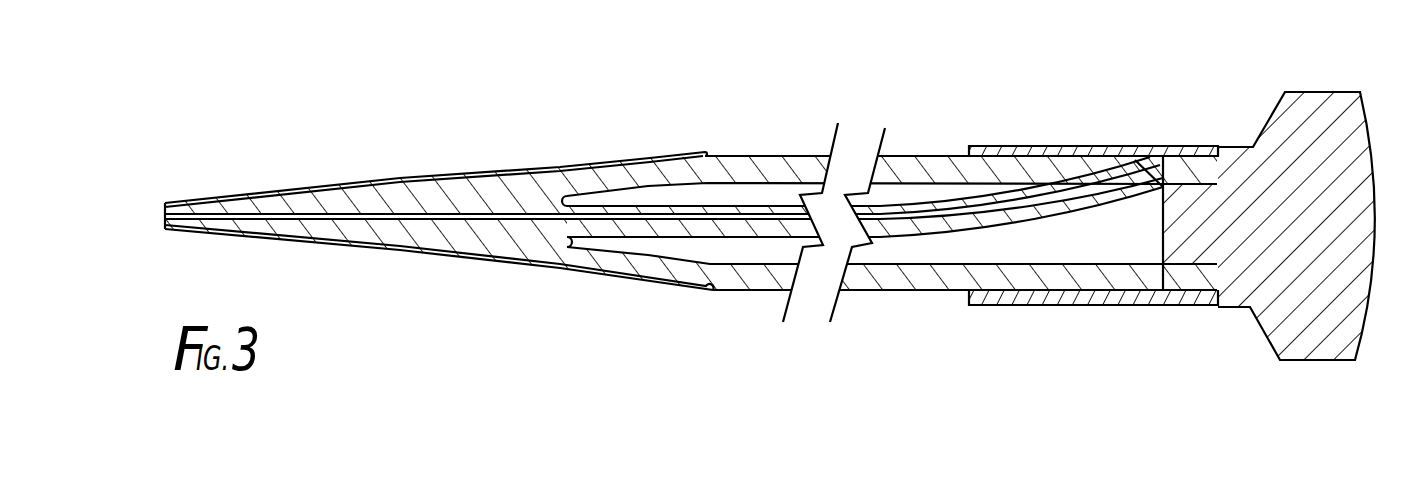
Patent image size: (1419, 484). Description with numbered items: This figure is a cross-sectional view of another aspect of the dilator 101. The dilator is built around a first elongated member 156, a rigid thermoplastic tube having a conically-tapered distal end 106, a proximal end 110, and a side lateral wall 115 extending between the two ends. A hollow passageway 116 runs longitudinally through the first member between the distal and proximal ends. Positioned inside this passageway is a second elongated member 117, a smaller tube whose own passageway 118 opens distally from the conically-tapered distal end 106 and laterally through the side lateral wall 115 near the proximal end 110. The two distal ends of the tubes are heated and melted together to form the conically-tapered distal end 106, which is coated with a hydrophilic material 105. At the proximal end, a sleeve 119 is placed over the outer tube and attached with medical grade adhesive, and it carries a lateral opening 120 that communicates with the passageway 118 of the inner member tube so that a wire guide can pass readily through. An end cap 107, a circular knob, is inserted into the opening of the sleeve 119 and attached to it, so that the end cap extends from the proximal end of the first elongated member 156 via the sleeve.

The dilator 101 is at (691, 218).
The hydrophilic material 105 is at (247, 195).
The conically-tapered distal end 106 is at (430, 155).
The end cap 107 is at (1375, 177).
The proximal end 110 is at (1150, 194).
The side lateral wall 115 is at (897, 283).
The hollow passageway 116 is at (1003, 237).
The second elongated member 117 is at (907, 205).
The passageway 118 is at (667, 222).
The sleeve 119 is at (1084, 146).
The lateral opening 120 is at (1127, 148).
The first elongated member 156 is at (890, 157).